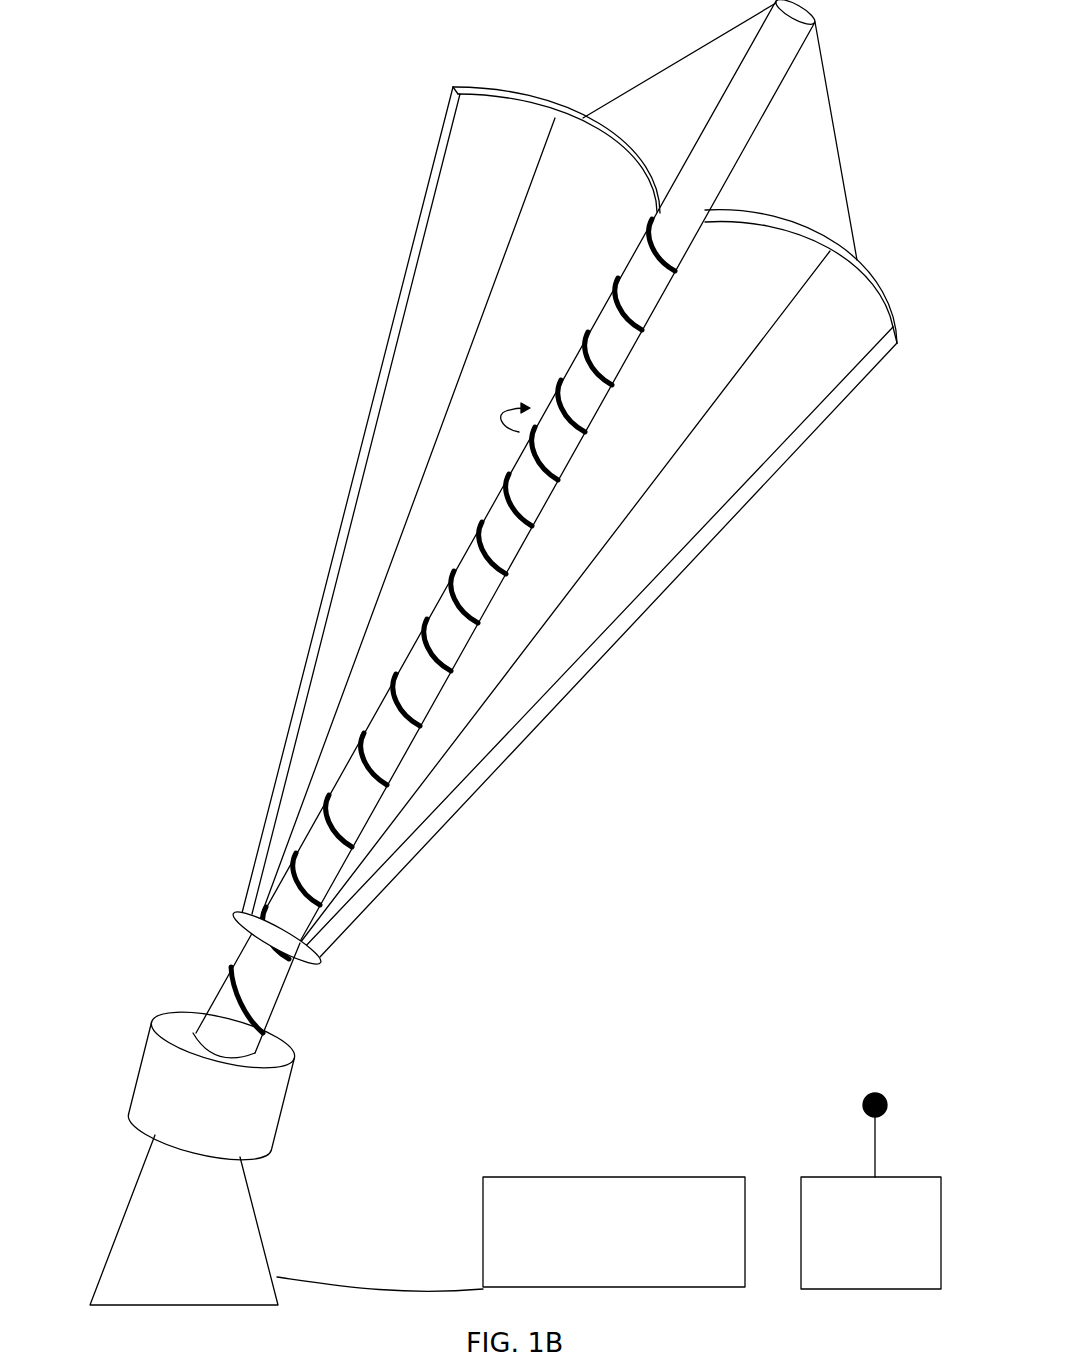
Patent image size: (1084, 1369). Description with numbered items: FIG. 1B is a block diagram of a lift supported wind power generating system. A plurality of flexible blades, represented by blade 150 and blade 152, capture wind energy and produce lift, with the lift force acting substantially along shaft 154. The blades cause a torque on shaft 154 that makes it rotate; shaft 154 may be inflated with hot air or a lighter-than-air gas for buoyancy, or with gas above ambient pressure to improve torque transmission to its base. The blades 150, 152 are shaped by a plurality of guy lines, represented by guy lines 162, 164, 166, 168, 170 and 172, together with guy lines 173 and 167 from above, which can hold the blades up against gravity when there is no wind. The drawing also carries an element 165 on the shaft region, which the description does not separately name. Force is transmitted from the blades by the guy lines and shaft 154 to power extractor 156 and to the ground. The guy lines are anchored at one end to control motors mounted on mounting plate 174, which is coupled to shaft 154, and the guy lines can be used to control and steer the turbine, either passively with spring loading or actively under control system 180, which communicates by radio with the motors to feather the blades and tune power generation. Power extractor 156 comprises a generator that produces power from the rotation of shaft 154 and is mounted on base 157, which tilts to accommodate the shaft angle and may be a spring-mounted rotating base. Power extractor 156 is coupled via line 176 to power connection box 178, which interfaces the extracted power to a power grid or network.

The blade 150 is at (521, 94).
The blade 152 is at (817, 208).
The shaft 154 is at (560, 378).
The power extractor 156 is at (142, 1070).
The base 157 is at (130, 1235).
The guy line 162 is at (812, 435).
The guy line 164 is at (765, 456).
The central shaft 165 is at (640, 318).
The guy line 166 is at (753, 353).
The guy line 167 is at (825, 80).
The guy line 168 is at (530, 190).
The guy line 170 is at (452, 133).
The guy line 172 is at (412, 237).
The guy line 173 is at (651, 84).
The mounting plate 174 is at (322, 968).
The line 176 is at (338, 1283).
The power connection box 178 is at (527, 1197).
The control system 180 is at (827, 1197).